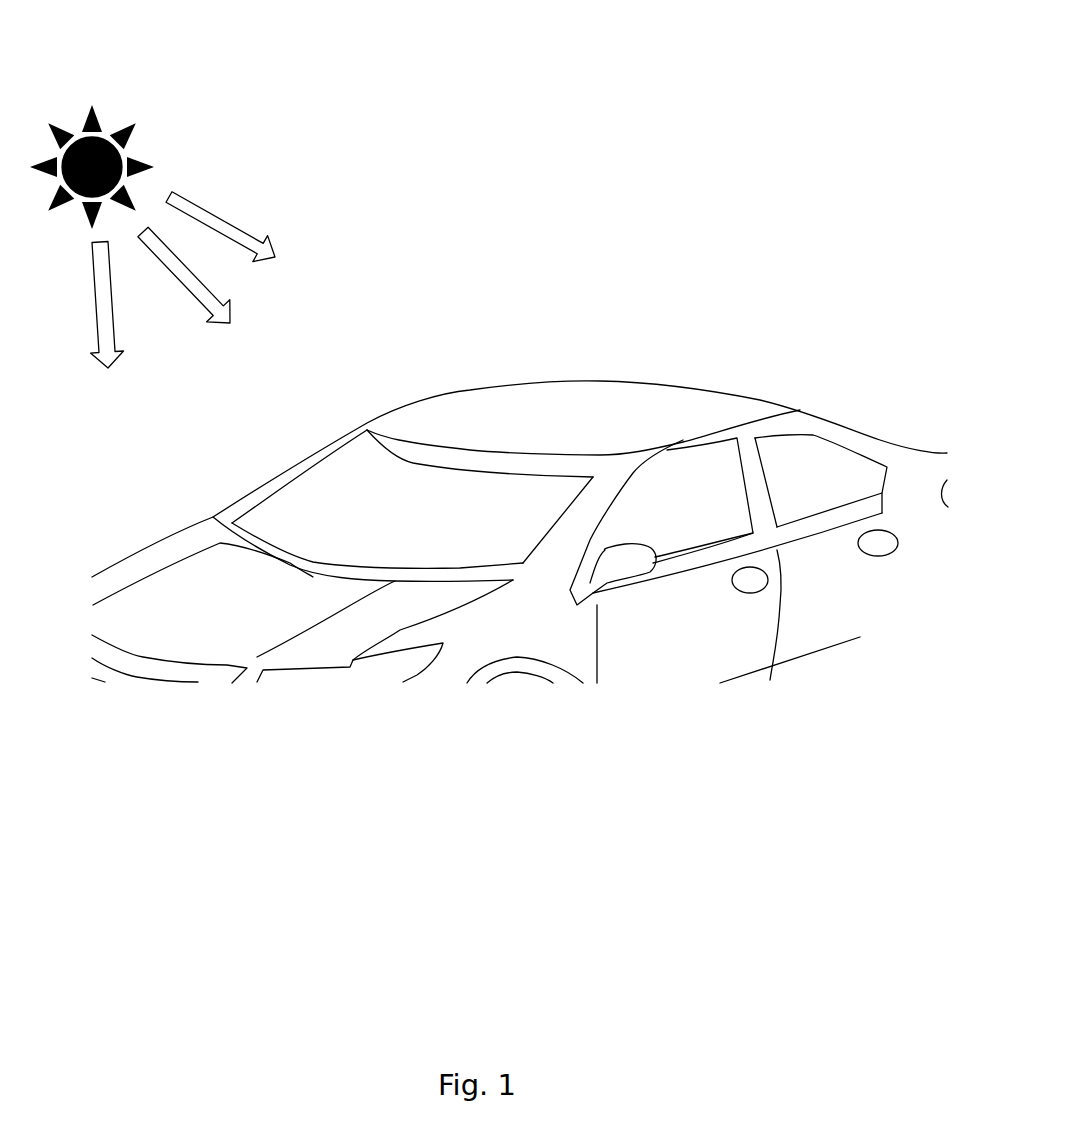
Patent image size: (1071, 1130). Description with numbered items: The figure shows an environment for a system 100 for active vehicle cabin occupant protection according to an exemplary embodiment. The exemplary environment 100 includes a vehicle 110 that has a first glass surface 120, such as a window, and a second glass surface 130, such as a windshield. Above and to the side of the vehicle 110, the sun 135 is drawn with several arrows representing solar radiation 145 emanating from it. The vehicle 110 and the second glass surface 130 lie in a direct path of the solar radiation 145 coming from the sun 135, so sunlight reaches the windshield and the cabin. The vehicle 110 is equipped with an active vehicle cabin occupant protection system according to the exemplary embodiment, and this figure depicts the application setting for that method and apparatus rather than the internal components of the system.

The environment for a system 100 is at (521, 24).
The vehicle 110 is at (605, 420).
The first glass surface 120 is at (692, 517).
The second glass surface 130 is at (282, 505).
The sun 135 is at (145, 115).
The solar radiation 145 is at (218, 197).